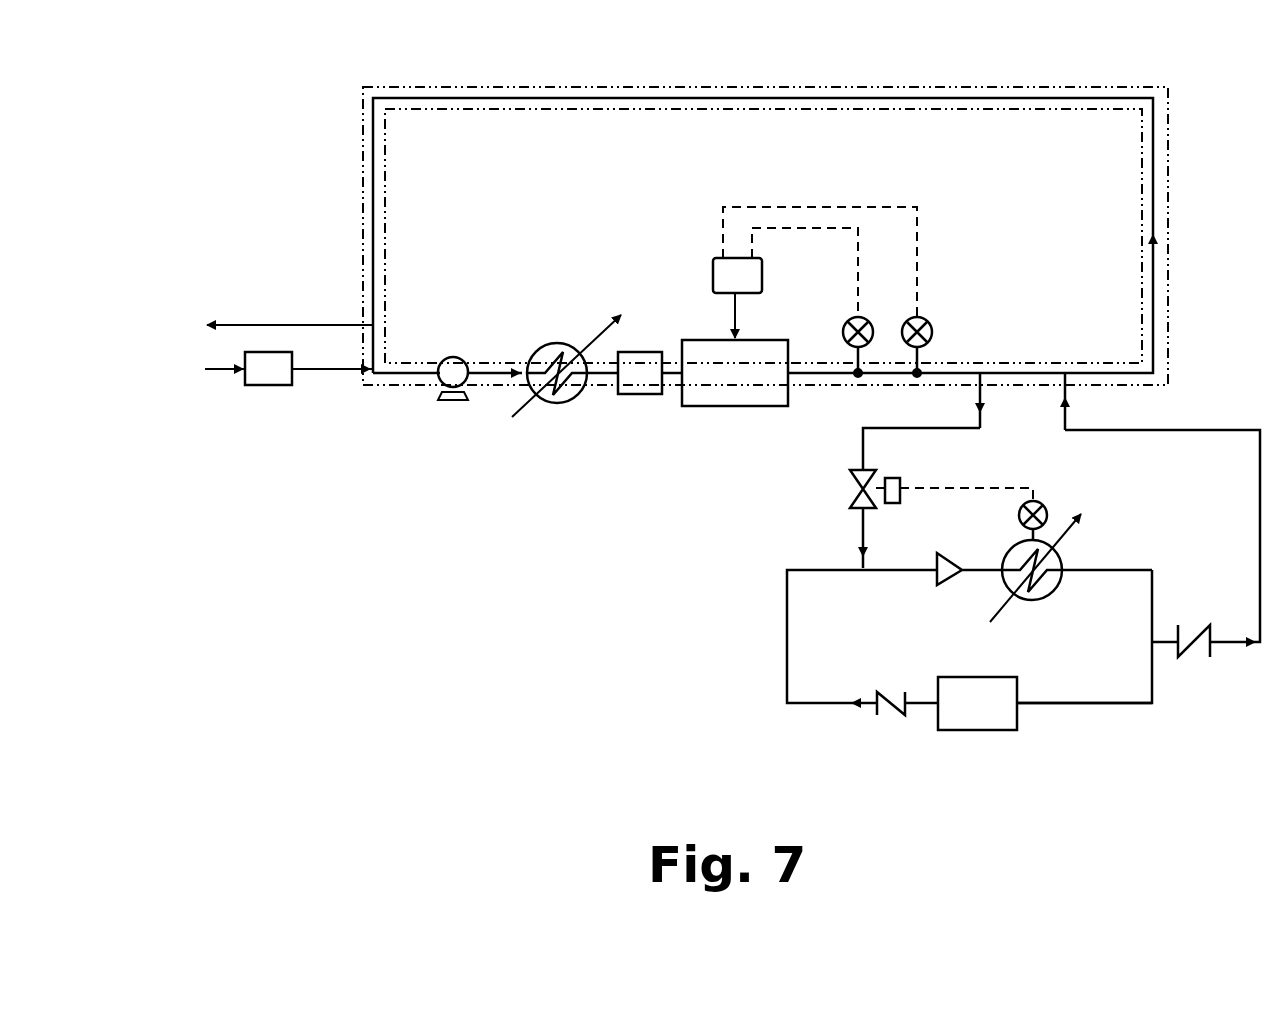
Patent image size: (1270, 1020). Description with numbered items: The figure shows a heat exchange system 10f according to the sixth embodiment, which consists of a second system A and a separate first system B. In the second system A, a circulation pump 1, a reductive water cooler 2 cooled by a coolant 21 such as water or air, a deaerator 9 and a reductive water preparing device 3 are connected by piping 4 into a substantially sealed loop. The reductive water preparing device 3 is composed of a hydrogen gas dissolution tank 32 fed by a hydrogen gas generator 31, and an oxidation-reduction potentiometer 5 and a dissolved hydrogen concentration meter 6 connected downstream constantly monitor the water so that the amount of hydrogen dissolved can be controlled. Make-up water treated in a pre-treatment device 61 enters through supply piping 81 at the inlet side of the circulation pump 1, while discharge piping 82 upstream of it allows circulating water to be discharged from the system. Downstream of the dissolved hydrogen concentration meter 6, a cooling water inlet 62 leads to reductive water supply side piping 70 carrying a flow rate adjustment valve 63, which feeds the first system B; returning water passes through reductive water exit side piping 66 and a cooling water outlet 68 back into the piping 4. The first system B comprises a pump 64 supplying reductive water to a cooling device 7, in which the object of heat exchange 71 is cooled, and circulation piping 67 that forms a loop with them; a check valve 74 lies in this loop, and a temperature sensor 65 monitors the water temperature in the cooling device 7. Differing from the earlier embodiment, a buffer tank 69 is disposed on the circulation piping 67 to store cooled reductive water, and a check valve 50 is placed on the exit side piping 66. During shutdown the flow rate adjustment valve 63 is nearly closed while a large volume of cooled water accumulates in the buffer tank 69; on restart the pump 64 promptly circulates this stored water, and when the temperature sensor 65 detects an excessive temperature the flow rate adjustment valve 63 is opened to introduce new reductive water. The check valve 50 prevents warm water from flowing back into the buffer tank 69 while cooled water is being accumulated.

The heat exchange system 10f is at (882, 85).
The second system A is at (1156, 198).
The piping 4 is at (1156, 338).
The first system B is at (787, 645).
The circulation pump 1 is at (440, 400).
The reductive water cooler 2 is at (560, 403).
The coolant 21 is at (598, 340).
The deaerator 9 is at (644, 395).
The reductive water preparing device 3 is at (728, 408).
The hydrogen gas dissolution tank 32 is at (757, 397).
The hydrogen gas generator 31 is at (713, 275).
The oxidation-reduction potentiometer 5 is at (846, 322).
The dissolved hydrogen concentration meter 6 is at (930, 320).
The cooling water inlet 62 is at (980, 373).
The cooling water outlet 68 is at (1065, 373).
The reductive water supply side piping 70 is at (885, 428).
The flow rate adjustment valve 63 is at (905, 468).
The temperature sensor 65 is at (1019, 518).
The pump 64 is at (937, 580).
The cooling device 7 is at (1058, 590).
The object of heat exchange 71 is at (1065, 525).
The reductive water exit side piping 66 is at (1228, 430).
The check valve 50 is at (1205, 660).
The circulation piping 67 is at (1120, 703).
The buffer tank 69 is at (978, 730).
The check valve 74 is at (877, 715).
The pre-treatment device 61 is at (250, 385).
The supply piping 81 is at (333, 368).
The discharge piping 82 is at (282, 325).